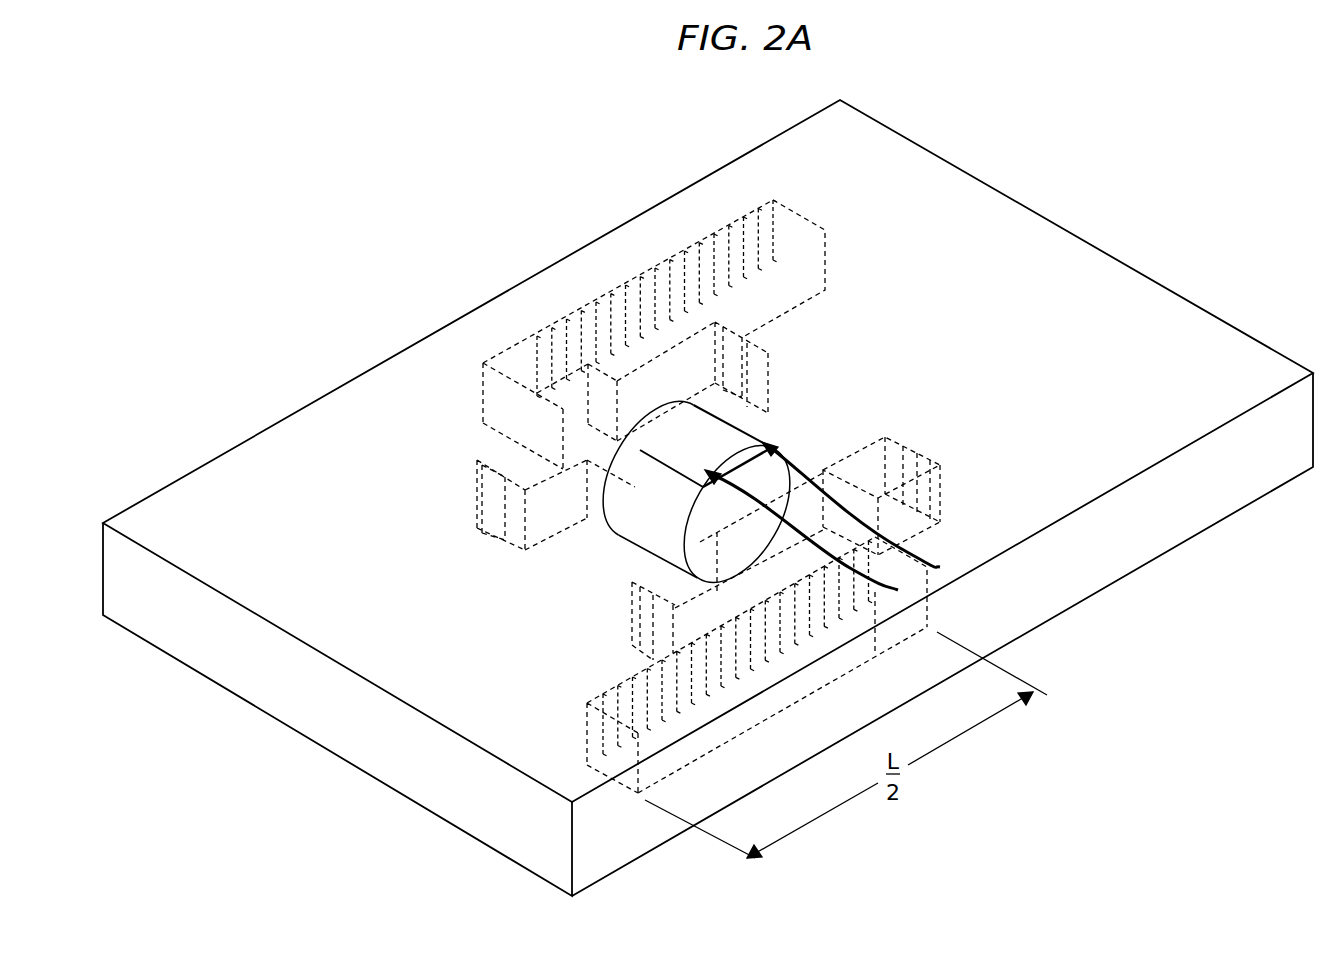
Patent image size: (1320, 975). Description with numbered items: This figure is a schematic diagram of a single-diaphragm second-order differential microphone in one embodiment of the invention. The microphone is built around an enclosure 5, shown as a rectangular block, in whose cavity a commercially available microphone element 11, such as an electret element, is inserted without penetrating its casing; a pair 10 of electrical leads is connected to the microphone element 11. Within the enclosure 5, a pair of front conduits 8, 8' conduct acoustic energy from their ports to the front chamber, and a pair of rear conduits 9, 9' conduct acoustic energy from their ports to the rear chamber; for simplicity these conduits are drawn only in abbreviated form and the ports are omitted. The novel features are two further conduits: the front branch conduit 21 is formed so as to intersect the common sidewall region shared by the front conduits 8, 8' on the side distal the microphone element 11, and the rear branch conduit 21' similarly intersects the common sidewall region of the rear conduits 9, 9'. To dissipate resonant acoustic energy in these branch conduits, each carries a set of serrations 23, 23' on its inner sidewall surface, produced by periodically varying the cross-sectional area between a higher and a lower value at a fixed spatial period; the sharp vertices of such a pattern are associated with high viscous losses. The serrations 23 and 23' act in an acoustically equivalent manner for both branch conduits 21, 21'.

The enclosure 5 is at (609, 839).
The front branch conduit 21 is at (706, 334).
The serrations 23 is at (658, 260).
The front conduit 8 is at (532, 487).
The front conduit 8' is at (752, 367).
The rear conduit 9 is at (695, 566).
The rear conduit 9' is at (881, 473).
The rear branch conduit 21' is at (717, 665).
The serrations 23' is at (713, 649).
The microphone element 11 is at (625, 505).
The pair of electrical leads 10 is at (940, 566).